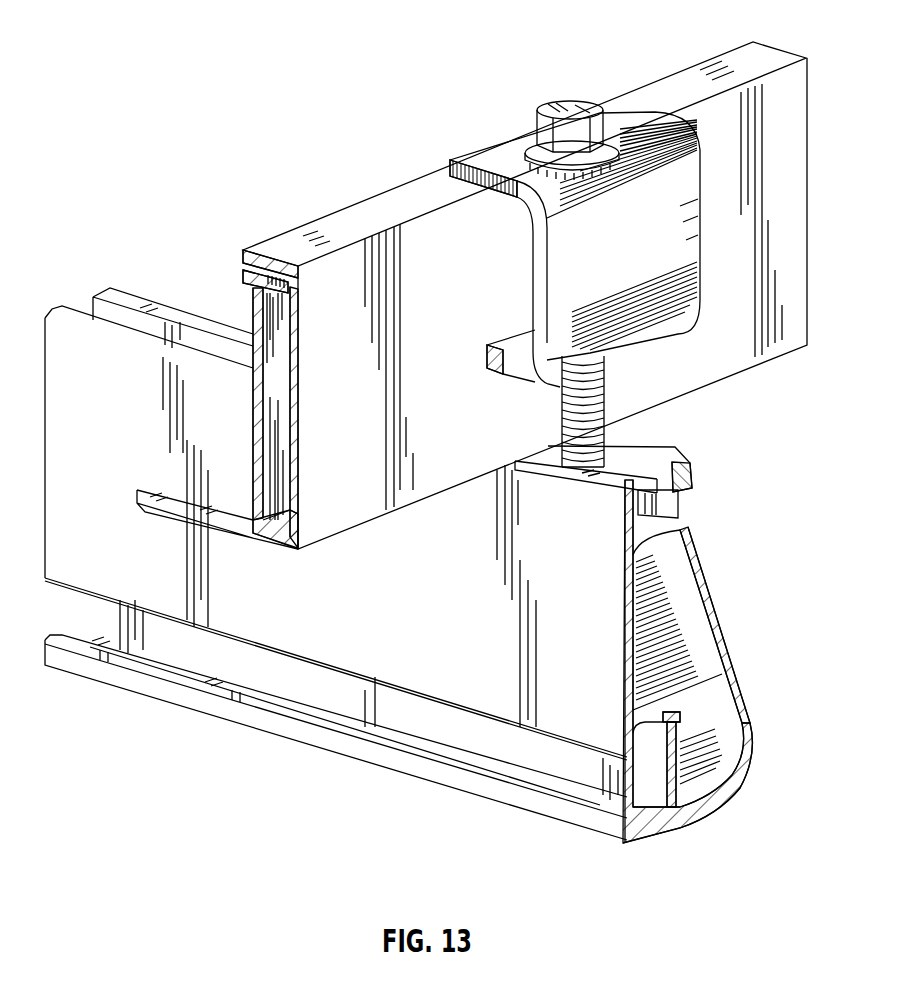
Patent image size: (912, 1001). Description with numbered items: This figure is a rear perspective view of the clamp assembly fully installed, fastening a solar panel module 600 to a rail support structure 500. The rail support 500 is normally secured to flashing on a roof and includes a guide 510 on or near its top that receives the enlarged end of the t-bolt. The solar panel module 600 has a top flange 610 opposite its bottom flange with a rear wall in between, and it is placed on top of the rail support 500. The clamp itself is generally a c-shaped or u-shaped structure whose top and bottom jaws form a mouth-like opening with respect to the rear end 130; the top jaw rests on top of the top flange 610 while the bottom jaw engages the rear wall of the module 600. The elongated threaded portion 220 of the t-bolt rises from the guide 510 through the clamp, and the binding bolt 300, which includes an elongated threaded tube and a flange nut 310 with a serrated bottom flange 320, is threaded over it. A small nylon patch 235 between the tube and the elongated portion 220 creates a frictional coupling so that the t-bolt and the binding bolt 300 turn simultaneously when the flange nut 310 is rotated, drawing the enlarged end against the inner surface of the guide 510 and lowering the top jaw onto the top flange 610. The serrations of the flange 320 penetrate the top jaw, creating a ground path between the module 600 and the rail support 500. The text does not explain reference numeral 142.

The rear end 130 is at (705, 240).
The clamp top plate cut face 142 is at (453, 183).
The elongated portion 220 is at (604, 416).
The nylon patch 235 is at (566, 420).
The binding bolt 300 is at (602, 362).
The flange nut 310 is at (547, 105).
The serrated bottom flange 320 is at (524, 160).
The rail support structure 500 is at (730, 633).
The guide 510 is at (695, 502).
The solar panel module 600 is at (808, 172).
The top flange 610 is at (295, 236).